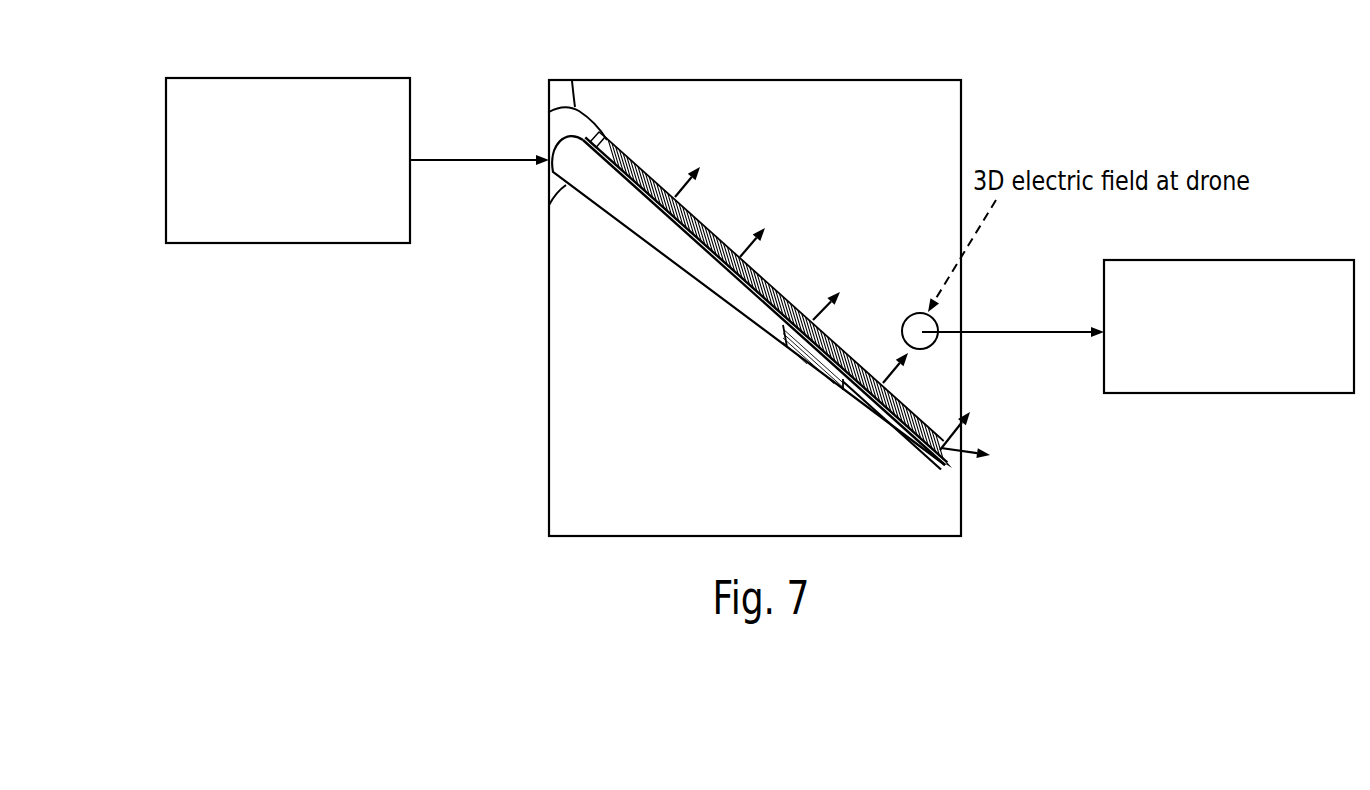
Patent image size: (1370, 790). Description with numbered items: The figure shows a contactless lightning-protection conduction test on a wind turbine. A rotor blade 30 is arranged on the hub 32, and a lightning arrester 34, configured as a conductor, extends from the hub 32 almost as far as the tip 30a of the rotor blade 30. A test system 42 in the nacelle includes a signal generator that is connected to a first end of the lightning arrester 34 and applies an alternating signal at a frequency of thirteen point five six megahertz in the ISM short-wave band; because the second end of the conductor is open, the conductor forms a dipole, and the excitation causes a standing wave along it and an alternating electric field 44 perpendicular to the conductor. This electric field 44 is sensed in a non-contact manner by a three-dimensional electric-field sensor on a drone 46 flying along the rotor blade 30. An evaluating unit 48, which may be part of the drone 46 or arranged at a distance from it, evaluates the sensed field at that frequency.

The rotor blade 30 is at (758, 340).
The tip 30a is at (953, 470).
The hub 32 is at (578, 122).
The lightning arrester 34 is at (870, 405).
The test system 42 is at (285, 245).
The electric field 44 is at (703, 222).
The drone 46 is at (932, 352).
The evaluating unit 48 is at (1225, 395).